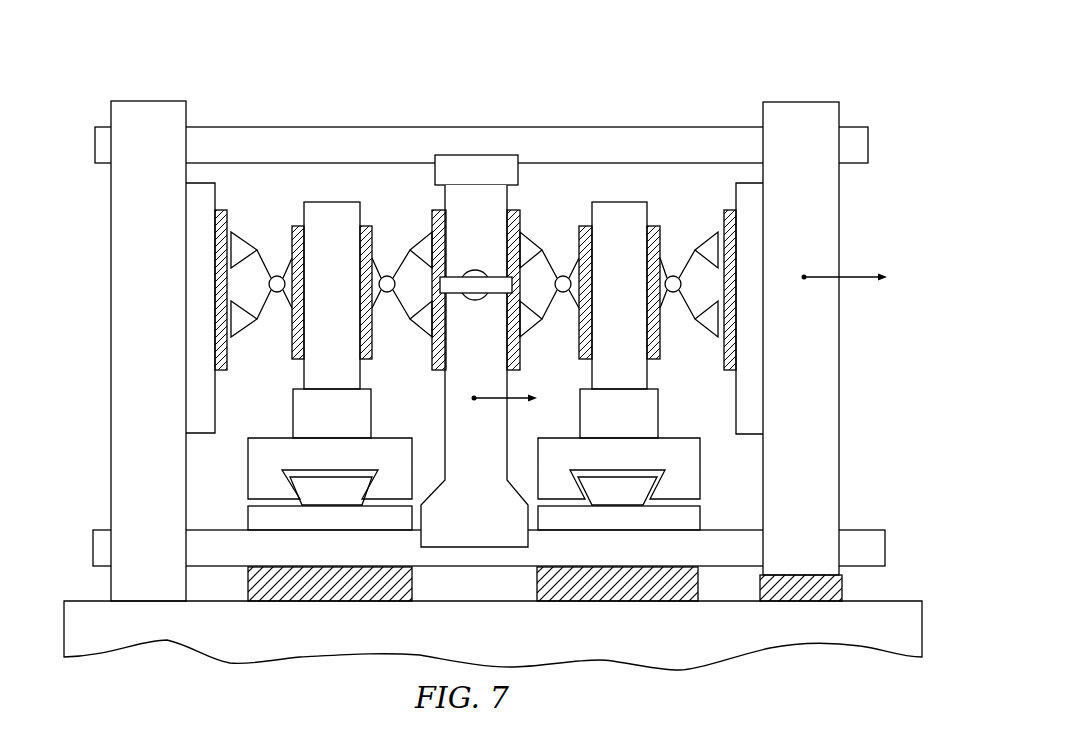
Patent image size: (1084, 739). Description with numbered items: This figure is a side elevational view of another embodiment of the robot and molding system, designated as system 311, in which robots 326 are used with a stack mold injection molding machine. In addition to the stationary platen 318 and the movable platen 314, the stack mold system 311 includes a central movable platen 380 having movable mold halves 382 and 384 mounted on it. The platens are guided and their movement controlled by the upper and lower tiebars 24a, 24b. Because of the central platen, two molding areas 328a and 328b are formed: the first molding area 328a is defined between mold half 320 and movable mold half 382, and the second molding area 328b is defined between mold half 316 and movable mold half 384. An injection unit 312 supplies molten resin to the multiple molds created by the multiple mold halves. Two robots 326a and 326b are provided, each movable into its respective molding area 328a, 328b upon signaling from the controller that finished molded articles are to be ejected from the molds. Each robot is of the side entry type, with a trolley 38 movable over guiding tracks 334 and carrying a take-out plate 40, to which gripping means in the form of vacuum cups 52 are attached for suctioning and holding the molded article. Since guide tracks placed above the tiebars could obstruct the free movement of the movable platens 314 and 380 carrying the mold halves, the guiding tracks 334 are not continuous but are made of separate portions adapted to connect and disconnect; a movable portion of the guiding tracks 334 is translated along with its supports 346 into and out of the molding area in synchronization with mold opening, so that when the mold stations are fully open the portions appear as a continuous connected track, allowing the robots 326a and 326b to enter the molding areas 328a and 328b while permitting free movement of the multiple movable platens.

The system 311 is at (473, 290).
The robots 326 is at (648, 164).
The movable platen 314 is at (796, 109).
The upper tiebar 24a is at (862, 141).
The lower tiebar 24b is at (865, 536).
The stationary platen 318 is at (110, 435).
The mold half 320 is at (218, 216).
The mold half 316 is at (733, 366).
The vacuum cups 52 is at (235, 322).
The molding area 328a is at (259, 186).
The molding area 328b is at (696, 190).
The robot 326a is at (291, 171).
The robot 326b is at (664, 195).
The take-out plate 40 is at (332, 208).
The central movable platen 380 is at (478, 196).
The movable mold half 382 is at (432, 213).
The movable mold half 384 is at (520, 213).
The injection unit 312 is at (473, 270).
The trolley 38 is at (272, 452).
The guiding tracks 334 is at (310, 495).
The supports 346 is at (298, 588).